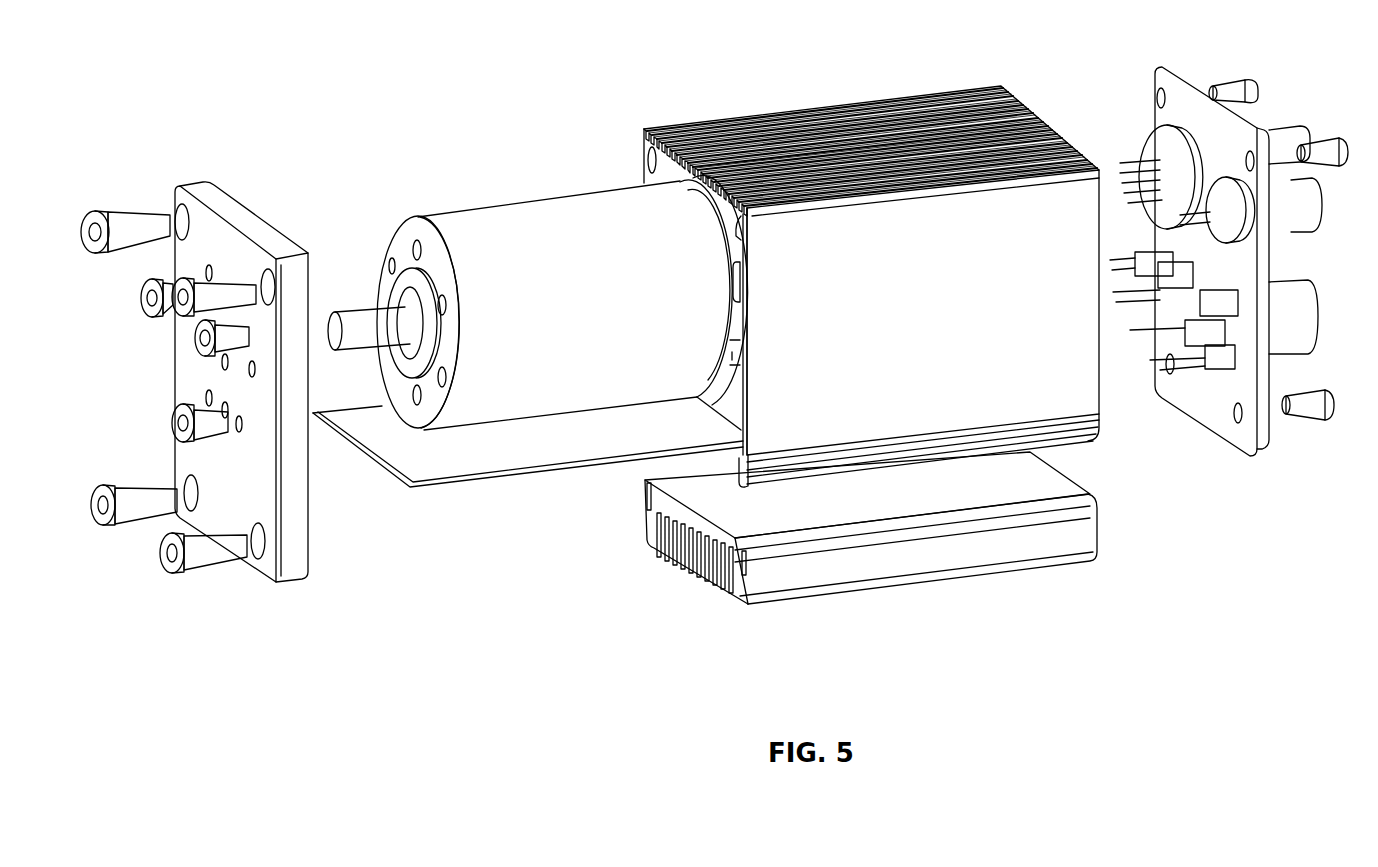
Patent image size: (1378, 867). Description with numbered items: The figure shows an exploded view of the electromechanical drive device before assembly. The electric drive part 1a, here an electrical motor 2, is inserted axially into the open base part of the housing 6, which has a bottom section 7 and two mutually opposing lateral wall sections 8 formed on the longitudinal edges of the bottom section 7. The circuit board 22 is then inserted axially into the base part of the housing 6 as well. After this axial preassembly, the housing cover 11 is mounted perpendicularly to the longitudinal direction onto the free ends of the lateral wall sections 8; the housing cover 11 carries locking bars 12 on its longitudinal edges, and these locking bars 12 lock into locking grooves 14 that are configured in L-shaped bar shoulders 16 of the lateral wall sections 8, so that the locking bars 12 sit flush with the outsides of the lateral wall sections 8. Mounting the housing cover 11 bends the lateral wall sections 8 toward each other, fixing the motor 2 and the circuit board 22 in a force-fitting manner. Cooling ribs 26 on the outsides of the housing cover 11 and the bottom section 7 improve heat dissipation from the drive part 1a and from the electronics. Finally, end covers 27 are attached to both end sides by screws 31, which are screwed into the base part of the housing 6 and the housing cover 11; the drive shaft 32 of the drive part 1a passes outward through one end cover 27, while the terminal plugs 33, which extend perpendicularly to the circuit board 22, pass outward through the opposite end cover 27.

The electrical motor 2 is at (525, 257).
The electric drive part 1a is at (582, 253).
The drive shaft 32 is at (353, 325).
The screws 31 is at (135, 215).
The end cover 27 is at (300, 512).
The circuit board 22 is at (455, 483).
The bottom section 7 is at (884, 334).
The cooling ribs 26 is at (1000, 95).
The base part of the housing 6 is at (1094, 163).
The lateral wall sections 8 is at (745, 318).
The bar shoulders 16 is at (1090, 436).
The locking grooves 14 is at (748, 462).
The housing cover 11 is at (824, 567).
The locking bars 12 is at (645, 503).
The terminal plugs 33 is at (1295, 224).